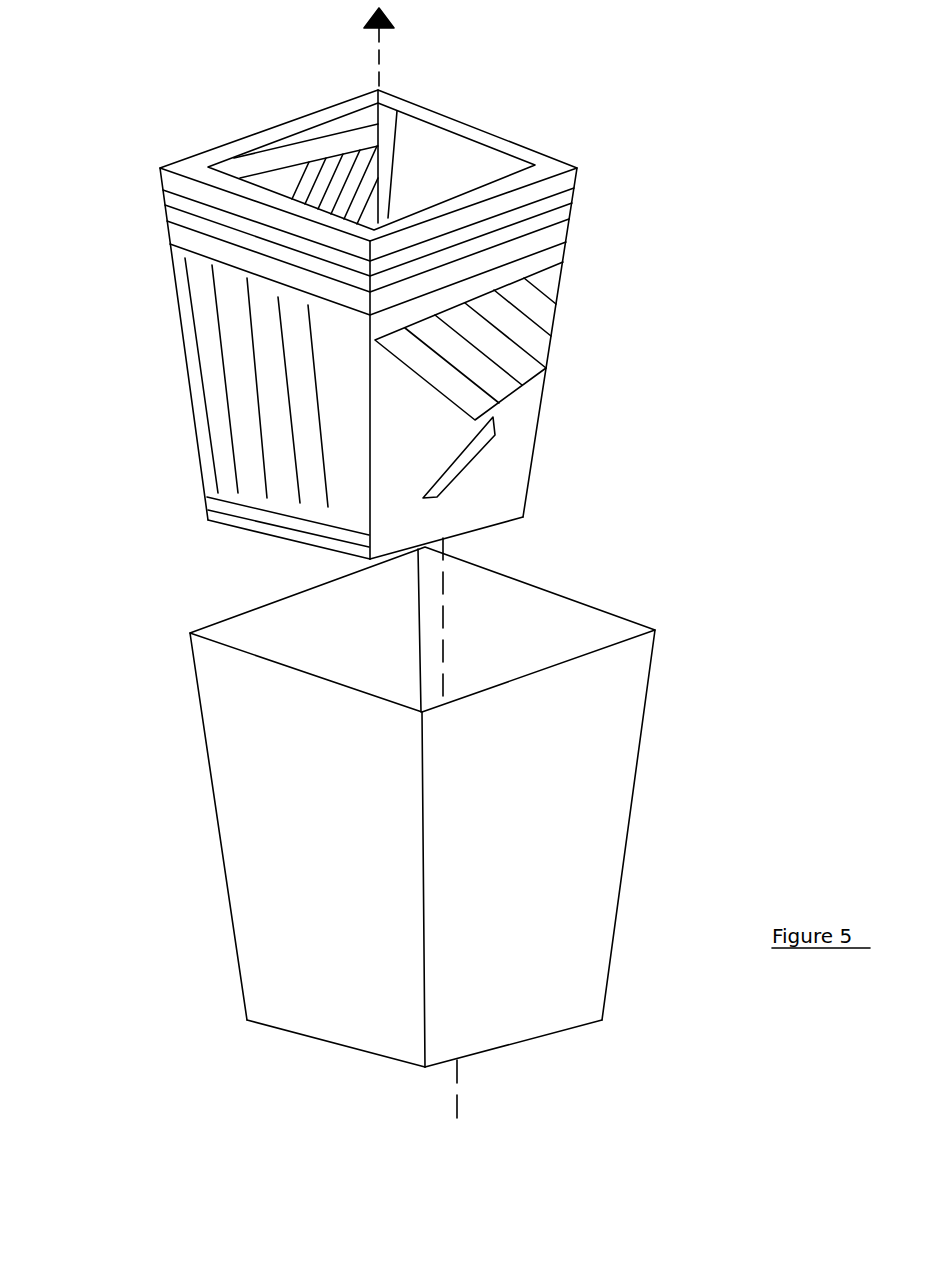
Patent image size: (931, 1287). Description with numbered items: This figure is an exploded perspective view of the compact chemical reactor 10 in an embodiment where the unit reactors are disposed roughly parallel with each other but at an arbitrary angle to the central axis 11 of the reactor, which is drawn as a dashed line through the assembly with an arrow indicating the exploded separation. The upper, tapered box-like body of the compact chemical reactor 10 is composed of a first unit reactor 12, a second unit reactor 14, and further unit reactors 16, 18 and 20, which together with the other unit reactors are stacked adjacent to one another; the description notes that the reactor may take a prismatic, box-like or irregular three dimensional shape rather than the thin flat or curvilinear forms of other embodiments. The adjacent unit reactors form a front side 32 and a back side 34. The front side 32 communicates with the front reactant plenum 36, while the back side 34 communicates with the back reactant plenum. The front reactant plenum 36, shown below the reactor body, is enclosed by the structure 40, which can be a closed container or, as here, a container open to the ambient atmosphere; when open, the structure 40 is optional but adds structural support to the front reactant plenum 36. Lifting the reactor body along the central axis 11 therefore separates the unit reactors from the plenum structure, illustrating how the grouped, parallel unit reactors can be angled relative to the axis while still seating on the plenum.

The compact chemical reactor 10 is at (530, 503).
The central axis 11 is at (392, 58).
The first unit reactor 12 is at (553, 228).
The second unit reactor 14 is at (515, 380).
The unit reactor 16 is at (493, 438).
The unit reactor 18 is at (215, 403).
The unit reactor 20 is at (207, 498).
The front side 32 is at (165, 231).
The back side 34 is at (390, 160).
The front reactant plenum 36 is at (565, 625).
The structure 40 is at (645, 693).